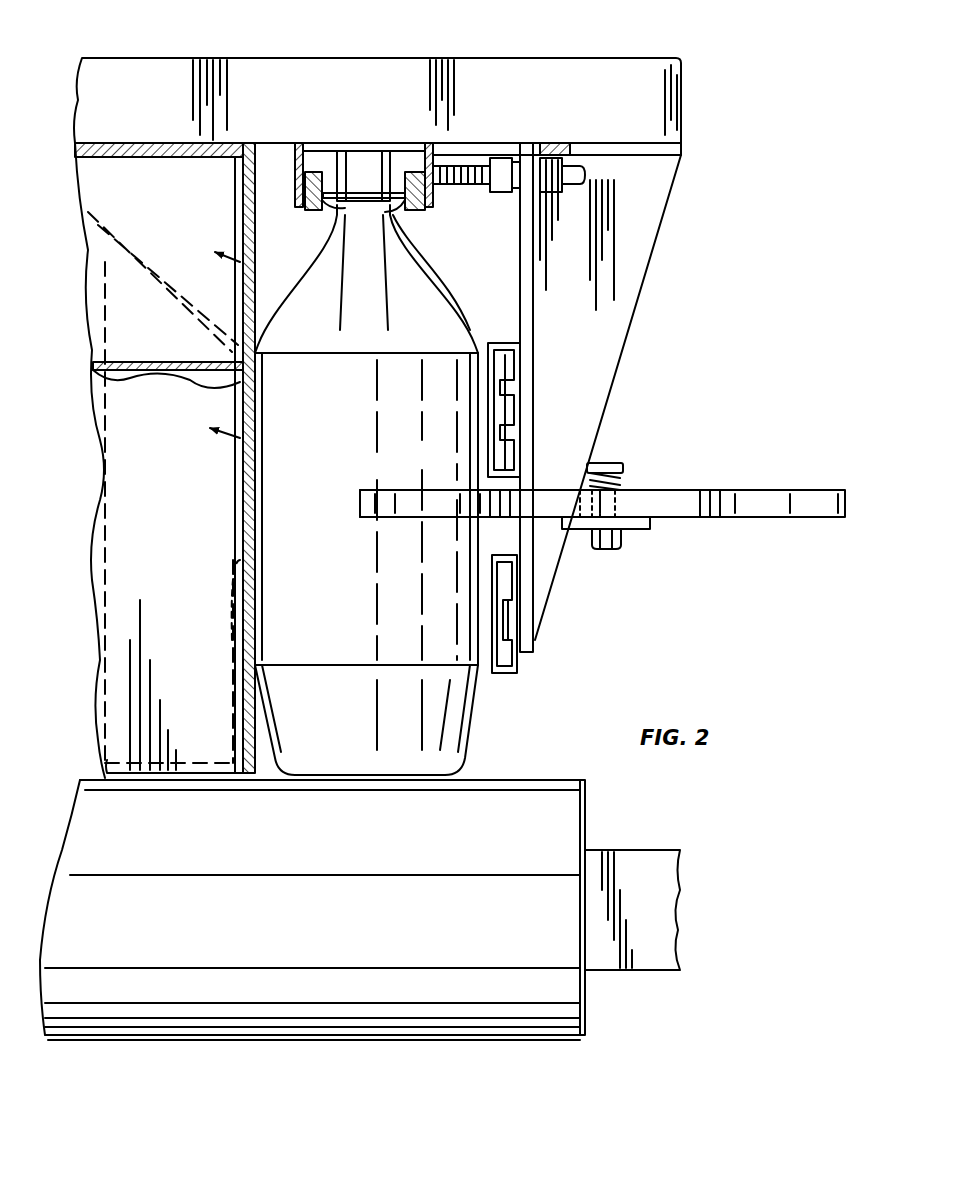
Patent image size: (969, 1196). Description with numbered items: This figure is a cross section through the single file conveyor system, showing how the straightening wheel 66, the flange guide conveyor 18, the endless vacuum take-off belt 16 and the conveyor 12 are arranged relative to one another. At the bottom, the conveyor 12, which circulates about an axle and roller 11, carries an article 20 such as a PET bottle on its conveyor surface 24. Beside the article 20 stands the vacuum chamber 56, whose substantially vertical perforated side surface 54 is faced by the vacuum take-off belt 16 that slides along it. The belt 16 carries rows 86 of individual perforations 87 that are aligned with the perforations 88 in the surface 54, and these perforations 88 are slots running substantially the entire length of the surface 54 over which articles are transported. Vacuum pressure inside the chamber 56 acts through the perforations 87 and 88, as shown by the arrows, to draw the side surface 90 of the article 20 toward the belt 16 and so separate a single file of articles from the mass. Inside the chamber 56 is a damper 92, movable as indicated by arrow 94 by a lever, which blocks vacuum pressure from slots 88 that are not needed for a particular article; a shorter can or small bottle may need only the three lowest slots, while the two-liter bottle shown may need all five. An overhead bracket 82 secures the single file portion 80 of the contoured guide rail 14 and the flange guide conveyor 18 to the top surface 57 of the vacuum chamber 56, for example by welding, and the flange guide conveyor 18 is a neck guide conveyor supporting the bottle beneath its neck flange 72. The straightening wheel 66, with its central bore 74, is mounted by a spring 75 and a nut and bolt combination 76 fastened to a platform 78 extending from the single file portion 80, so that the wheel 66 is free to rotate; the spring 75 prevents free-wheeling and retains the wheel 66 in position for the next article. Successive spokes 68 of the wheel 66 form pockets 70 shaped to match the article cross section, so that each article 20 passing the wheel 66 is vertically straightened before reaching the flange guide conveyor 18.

The axle and roller 11 is at (622, 852).
The conveyor 12 is at (80, 850).
The contoured guide rail 14 is at (640, 282).
The vacuum take-off belt 16 is at (255, 600).
The flange guide conveyor 18 is at (430, 205).
The article 20 is at (372, 308).
The conveyor surface 24 is at (500, 780).
The perforated side surface 54 is at (245, 515).
The vacuum chamber 56 is at (75, 262).
The top surface 57 is at (105, 130).
The straightening wheel 66 is at (428, 518).
The spoke 68 is at (362, 498).
The pocket 70 is at (478, 488).
The neck flange 72 is at (400, 218).
The central bore 74 is at (625, 508).
The spring 75 is at (590, 490).
The nut and bolt combination 76 is at (605, 462).
The platform 78 is at (645, 530).
The single file portion 80 is at (505, 355).
The overhead bracket 82 is at (540, 60).
The rows of perforations 86 is at (266, 268).
The perforation 87 is at (254, 228).
The perforation 88 is at (235, 270).
The side surface 90 is at (250, 418).
The damper 92 is at (108, 352).
The arrow 94 is at (168, 310).